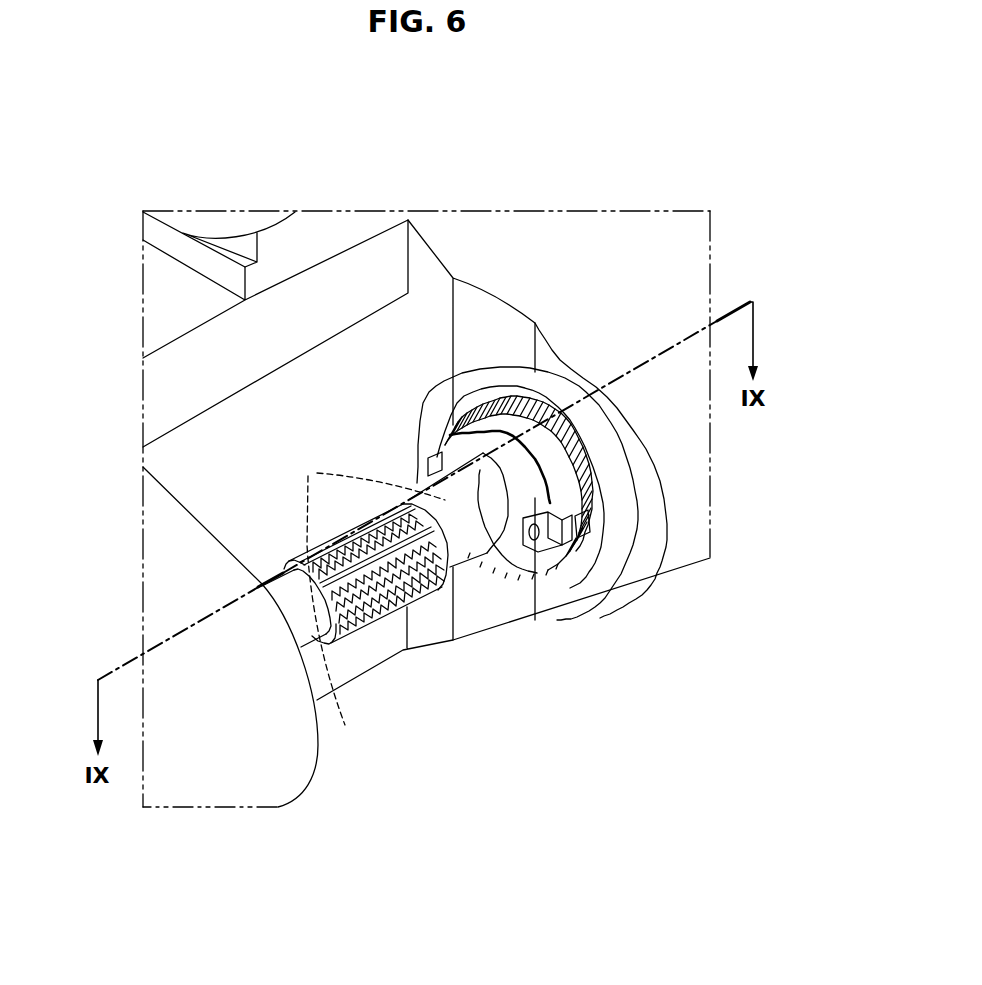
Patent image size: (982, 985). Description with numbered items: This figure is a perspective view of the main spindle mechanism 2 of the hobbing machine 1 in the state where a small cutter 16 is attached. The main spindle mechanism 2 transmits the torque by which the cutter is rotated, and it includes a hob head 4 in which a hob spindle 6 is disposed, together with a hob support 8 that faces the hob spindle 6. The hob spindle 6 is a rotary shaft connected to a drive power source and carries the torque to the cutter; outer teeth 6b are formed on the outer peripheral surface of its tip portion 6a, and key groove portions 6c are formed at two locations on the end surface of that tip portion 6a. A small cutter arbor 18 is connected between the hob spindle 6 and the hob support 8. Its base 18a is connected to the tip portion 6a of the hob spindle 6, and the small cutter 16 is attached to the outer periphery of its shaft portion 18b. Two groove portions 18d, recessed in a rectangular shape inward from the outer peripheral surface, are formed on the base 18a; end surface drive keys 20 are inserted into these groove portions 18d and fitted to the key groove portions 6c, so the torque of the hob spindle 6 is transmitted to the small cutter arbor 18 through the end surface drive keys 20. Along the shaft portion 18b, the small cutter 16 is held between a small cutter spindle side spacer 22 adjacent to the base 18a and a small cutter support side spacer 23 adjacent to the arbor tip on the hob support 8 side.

The hobbing machine 1 is at (416, 761).
The main spindle mechanism 2 is at (562, 547).
The hob head 4 is at (687, 498).
The hob spindle 6 is at (447, 440).
The tip portion 6a is at (455, 423).
The outer teeth 6b is at (513, 403).
The key groove portions 6c is at (593, 512).
The hob support 8 is at (278, 757).
The small cutter 16 is at (383, 603).
The small cutter arbor 18 is at (332, 616).
The base 18a is at (497, 553).
The shaft portion 18b is at (357, 474).
The groove portions 18d is at (527, 577).
The end surface drive keys 20 is at (574, 582).
The small cutter spindle side spacer 22 is at (470, 528).
The small cutter support side spacer 23 is at (290, 597).